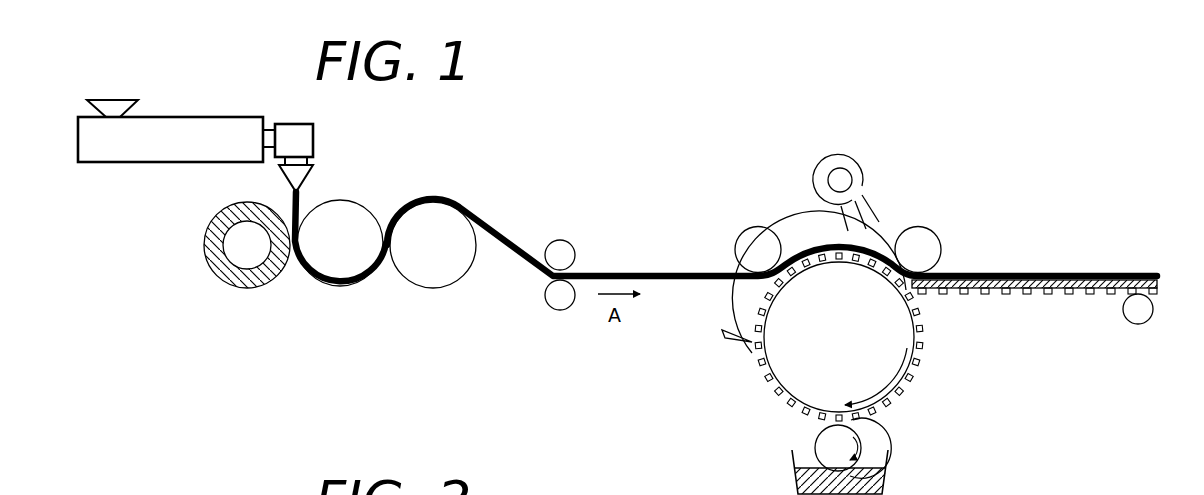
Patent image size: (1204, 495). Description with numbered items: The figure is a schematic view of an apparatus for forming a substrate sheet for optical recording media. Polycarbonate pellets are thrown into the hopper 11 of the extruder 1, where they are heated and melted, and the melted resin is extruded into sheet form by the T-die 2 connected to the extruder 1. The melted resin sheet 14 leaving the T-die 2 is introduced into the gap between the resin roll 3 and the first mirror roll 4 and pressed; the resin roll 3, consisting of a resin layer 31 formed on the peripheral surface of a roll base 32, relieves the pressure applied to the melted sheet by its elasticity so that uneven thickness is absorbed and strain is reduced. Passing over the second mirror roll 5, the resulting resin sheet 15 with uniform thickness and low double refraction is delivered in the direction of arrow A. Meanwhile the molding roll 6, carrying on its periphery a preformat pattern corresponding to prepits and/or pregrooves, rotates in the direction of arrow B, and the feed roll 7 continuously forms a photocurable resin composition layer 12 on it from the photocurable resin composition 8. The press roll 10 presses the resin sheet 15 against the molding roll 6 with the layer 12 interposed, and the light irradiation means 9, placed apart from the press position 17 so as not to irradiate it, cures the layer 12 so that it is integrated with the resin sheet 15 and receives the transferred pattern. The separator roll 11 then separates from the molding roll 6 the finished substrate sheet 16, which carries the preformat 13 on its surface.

The extruder 1 is at (147, 157).
The hopper / separator roll 11 is at (142, 105).
The T-die 2 is at (288, 178).
The melted resin sheet 14 is at (304, 186).
The resin roll 3 is at (216, 282).
The resin layer 31 is at (283, 278).
The roll base 32 is at (252, 263).
The first mirror roll 4 is at (364, 212).
The second mirror roll 5 is at (433, 278).
The resin sheet 15 is at (500, 232).
The press roll 10 is at (760, 226).
The light irradiation means 9 is at (866, 172).
The molding roll 6 is at (914, 336).
The press position 17 is at (804, 288).
The photocurable resin composition layer 12 is at (760, 372).
The feed roll 7 is at (822, 450).
The photocurable resin composition 8 is at (890, 468).
The preformat 13 is at (1064, 294).
The substrate sheet 16 is at (1160, 283).